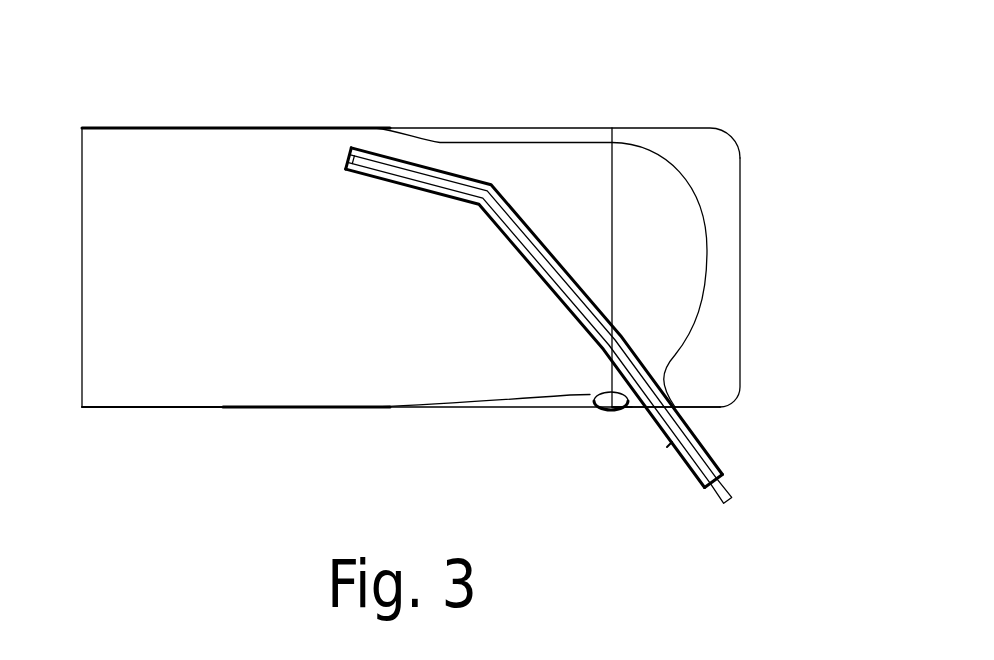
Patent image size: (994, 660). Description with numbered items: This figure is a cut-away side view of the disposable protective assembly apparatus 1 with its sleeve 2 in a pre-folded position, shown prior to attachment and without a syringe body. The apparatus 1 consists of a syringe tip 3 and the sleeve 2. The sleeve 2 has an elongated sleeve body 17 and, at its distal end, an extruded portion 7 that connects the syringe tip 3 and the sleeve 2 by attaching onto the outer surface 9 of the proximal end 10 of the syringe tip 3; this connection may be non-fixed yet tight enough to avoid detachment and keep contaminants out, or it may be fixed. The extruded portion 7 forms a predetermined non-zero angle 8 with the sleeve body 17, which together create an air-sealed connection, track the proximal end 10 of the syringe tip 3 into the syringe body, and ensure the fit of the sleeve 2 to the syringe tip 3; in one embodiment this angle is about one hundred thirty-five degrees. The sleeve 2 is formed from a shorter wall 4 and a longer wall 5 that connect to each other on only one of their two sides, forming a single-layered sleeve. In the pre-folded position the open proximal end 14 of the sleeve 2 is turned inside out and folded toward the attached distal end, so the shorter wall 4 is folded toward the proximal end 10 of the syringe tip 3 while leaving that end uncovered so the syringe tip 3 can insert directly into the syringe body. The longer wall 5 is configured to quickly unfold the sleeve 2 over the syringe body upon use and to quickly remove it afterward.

The disposable protective assembly apparatus 1 is at (760, 112).
The sleeve 2 is at (193, 165).
The syringe tip 3 is at (430, 165).
The shorter wall 4 is at (594, 128).
The longer wall 5 is at (738, 153).
The extruded portion 7 is at (690, 420).
The predetermined non-zero angle 8 is at (622, 408).
The outer surface 9 is at (693, 427).
The proximal end 10 is at (708, 492).
The open proximal end 14 is at (612, 253).
The sleeve body 17 is at (588, 395).